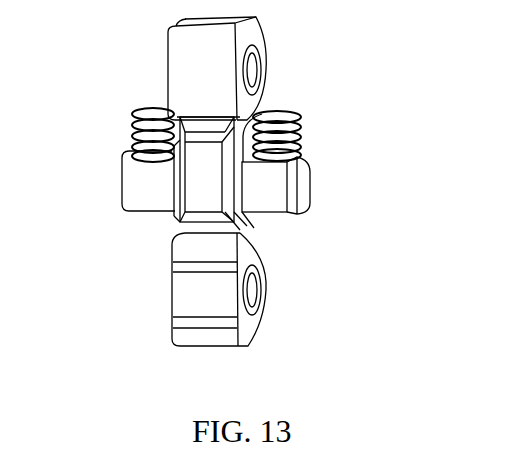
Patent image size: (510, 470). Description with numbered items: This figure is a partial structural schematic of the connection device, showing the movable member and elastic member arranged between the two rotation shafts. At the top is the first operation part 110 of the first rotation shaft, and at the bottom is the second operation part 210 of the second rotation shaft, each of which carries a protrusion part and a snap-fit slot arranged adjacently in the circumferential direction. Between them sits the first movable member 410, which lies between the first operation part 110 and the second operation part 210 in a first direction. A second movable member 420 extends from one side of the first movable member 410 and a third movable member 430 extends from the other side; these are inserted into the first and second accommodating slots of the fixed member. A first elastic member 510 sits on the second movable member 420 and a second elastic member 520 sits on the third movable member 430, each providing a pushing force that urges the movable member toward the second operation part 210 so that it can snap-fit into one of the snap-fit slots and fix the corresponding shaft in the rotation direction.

The first operation part 110 is at (202, 77).
The second operation part 210 is at (248, 330).
The first movable member 410 is at (200, 193).
The second movable member 420 is at (152, 202).
The third movable member 430 is at (272, 192).
The first elastic member 510 is at (137, 132).
The second elastic member 520 is at (312, 162).